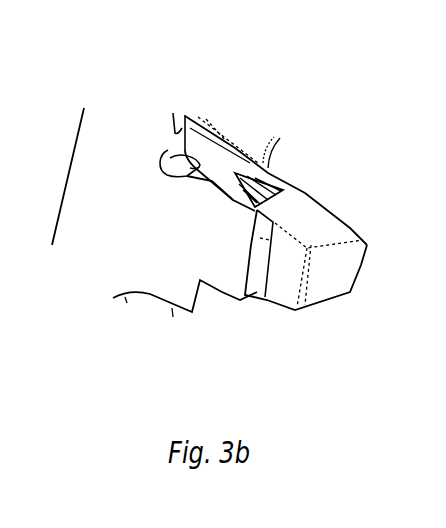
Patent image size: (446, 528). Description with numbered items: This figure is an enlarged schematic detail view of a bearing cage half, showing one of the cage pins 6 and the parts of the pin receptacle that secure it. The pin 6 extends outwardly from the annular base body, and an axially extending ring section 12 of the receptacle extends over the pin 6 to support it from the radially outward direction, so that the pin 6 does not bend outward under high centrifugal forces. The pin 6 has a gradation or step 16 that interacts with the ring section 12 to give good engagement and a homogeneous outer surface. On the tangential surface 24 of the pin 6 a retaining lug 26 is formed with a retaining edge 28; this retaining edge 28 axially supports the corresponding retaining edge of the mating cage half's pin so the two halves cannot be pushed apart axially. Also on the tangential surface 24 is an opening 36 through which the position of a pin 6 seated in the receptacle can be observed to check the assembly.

The pin 6 is at (311, 230).
The ring section 12 is at (171, 122).
The step 16 is at (256, 275).
The tangential surface 24 is at (290, 197).
The retaining lug 26 is at (252, 215).
The retaining edge 28 is at (243, 181).
The opening 36 is at (168, 150).